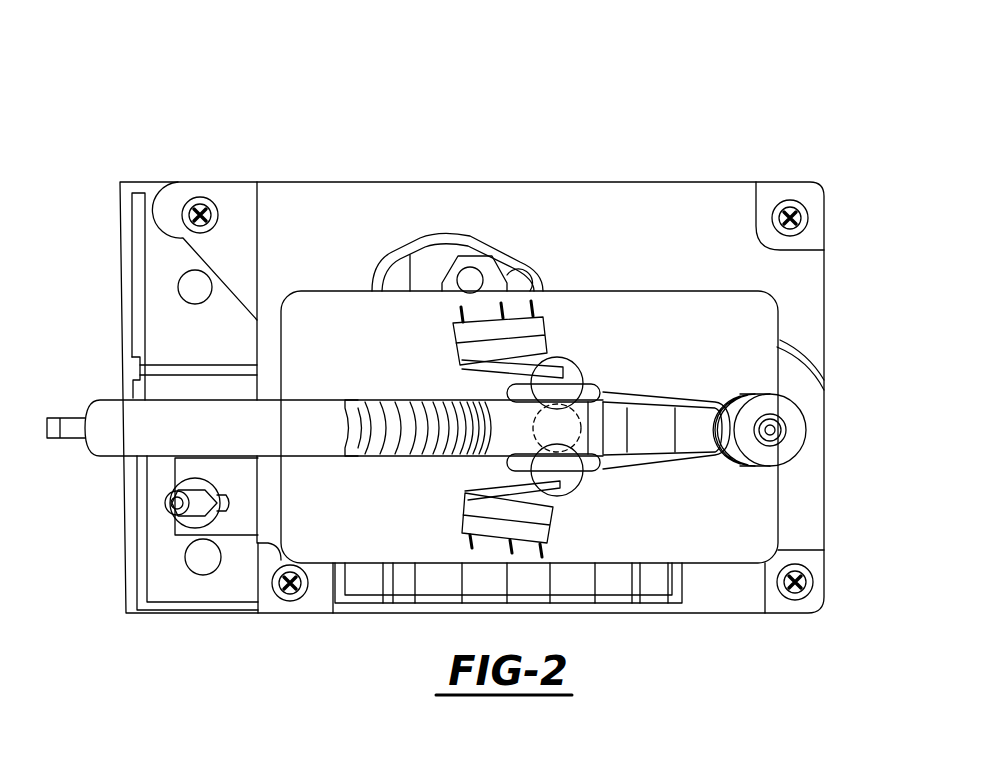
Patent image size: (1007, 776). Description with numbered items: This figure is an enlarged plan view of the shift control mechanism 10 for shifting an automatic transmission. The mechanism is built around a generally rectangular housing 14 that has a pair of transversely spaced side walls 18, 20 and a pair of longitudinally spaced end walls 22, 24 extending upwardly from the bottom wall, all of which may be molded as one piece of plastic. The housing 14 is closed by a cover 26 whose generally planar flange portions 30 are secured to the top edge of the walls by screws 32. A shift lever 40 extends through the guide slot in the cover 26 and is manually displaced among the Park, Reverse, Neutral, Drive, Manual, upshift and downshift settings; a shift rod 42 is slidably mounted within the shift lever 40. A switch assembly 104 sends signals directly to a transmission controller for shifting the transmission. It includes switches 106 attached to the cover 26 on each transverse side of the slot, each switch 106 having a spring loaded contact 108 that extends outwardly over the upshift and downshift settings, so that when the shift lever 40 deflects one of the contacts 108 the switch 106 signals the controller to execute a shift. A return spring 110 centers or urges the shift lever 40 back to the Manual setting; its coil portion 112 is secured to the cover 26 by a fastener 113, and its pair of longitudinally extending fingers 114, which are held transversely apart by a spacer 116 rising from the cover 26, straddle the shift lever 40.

The shift control mechanism 10 is at (106, 162).
The housing 14 is at (728, 178).
The side wall 18 is at (173, 615).
The side wall 20 is at (162, 187).
The end wall 22 is at (826, 332).
The end wall 24 is at (122, 258).
The cover 26 is at (416, 185).
The flange portion 30 is at (247, 197).
The screw 32 is at (203, 198).
The shift lever 40 is at (115, 448).
The shift rod 42 is at (68, 422).
The switch assembly 104 is at (546, 316).
The switch 106 is at (540, 338).
The spring loaded contact 108 is at (572, 374).
The return spring 110 is at (727, 390).
The coil portion 112 is at (743, 468).
The fastener 113 is at (776, 430).
The finger 114 is at (660, 396).
The spacer 116 is at (668, 458).